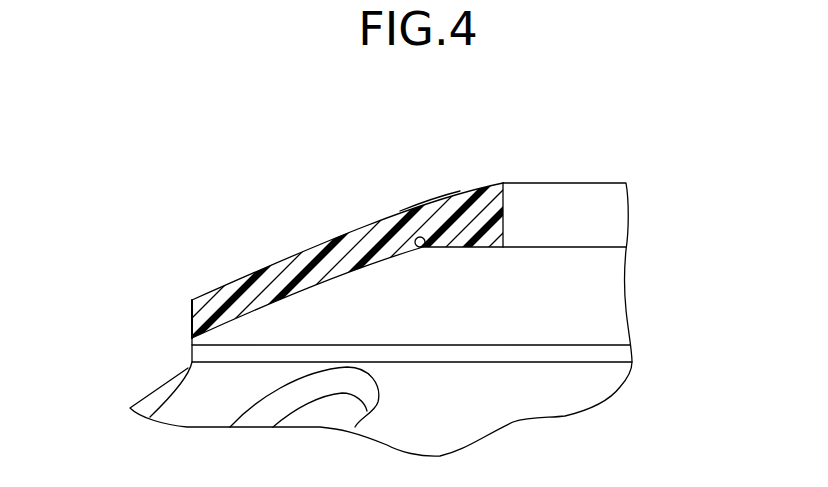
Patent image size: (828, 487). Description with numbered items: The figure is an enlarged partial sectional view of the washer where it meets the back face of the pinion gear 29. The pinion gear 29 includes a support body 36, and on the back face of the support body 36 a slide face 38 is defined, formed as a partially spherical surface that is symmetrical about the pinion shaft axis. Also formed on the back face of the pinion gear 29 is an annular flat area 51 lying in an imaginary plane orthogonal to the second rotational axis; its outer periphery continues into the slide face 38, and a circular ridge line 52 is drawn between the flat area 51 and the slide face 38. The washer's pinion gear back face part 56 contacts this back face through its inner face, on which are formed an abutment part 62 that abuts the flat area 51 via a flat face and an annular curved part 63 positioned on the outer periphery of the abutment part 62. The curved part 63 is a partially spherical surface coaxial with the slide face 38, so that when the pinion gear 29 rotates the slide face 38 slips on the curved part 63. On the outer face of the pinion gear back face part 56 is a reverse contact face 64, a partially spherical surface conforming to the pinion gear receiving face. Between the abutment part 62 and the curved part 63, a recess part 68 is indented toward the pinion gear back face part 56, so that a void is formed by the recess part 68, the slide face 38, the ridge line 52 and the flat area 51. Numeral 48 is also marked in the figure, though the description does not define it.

The pinion gear 29 is at (188, 352).
The support body 36 is at (610, 305).
The slide face 38 is at (360, 267).
The end edge 48 is at (188, 306).
The flat area 51 is at (465, 240).
The ridge line 52 is at (420, 236).
The pinion gear back face part 56 is at (192, 320).
The abutment part 62 is at (485, 248).
The curved part 63 is at (303, 295).
The reverse contact face 64 is at (302, 250).
The recess part 68 is at (420, 248).